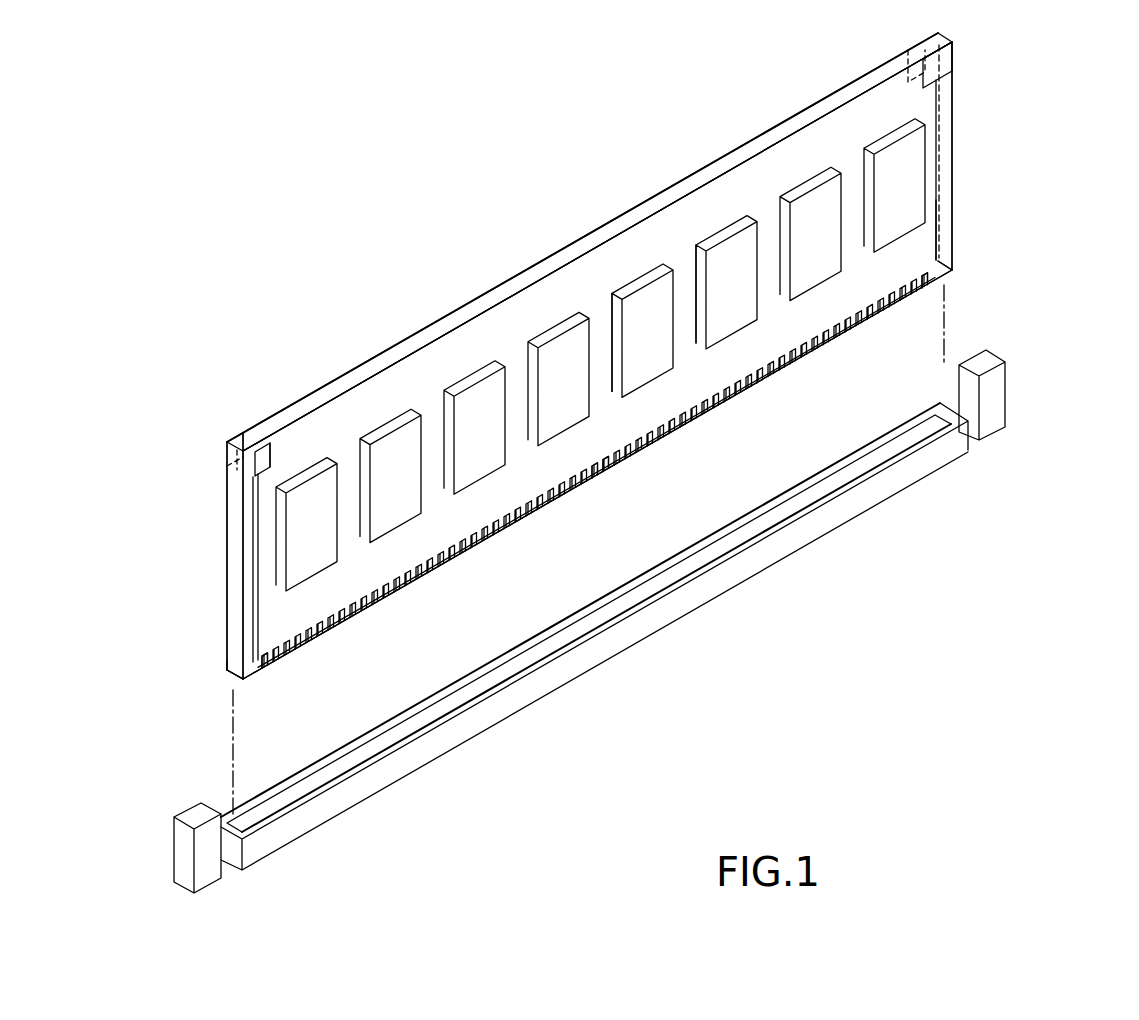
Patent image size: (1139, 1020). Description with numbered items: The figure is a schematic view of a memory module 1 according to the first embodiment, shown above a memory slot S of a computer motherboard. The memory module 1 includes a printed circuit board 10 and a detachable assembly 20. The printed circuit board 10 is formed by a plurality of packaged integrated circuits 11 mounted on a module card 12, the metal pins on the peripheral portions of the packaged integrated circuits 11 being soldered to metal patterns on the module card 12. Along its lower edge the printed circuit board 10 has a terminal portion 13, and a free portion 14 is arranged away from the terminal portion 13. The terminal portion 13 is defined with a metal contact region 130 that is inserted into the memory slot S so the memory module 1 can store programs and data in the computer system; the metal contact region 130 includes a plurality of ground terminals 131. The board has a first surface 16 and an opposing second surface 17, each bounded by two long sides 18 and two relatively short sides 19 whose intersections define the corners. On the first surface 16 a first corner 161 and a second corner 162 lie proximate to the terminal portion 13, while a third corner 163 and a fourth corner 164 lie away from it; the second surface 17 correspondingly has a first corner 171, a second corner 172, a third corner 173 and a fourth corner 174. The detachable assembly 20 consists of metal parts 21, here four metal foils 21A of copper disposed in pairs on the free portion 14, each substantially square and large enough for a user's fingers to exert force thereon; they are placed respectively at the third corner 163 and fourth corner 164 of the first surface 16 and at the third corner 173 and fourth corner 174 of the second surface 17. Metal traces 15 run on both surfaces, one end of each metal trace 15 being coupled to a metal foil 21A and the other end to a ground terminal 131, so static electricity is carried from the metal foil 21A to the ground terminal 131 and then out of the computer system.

The memory module 1 is at (503, 281).
The printed circuit board 10 is at (512, 176).
The packaged integrated circuits 11 is at (637, 283).
The module card 12 is at (668, 245).
The terminal portion 13 is at (593, 477).
The metal contact region 130 is at (601, 478).
The ground terminals 131 is at (257, 660).
The free portion 14 is at (698, 165).
The metal traces 15 is at (253, 568).
The first surface 16 is at (446, 360).
The second surface 17 is at (366, 392).
The long sides 18 is at (262, 432).
The relatively short sides 19 is at (227, 466).
The detachable assembly 20 is at (589, 358).
The metal parts 21 is at (588, 358).
The metal foils 21A is at (231, 474).
The first corner 161 is at (256, 675).
The second corner 162 is at (960, 263).
The third corner 163 is at (281, 446).
The fourth corner 164 is at (915, 89).
The first corner 171 is at (218, 657).
The second corner 172 is at (928, 245).
The third corner 173 is at (224, 432).
The fourth corner 174 is at (905, 61).
The memory slot S is at (513, 651).